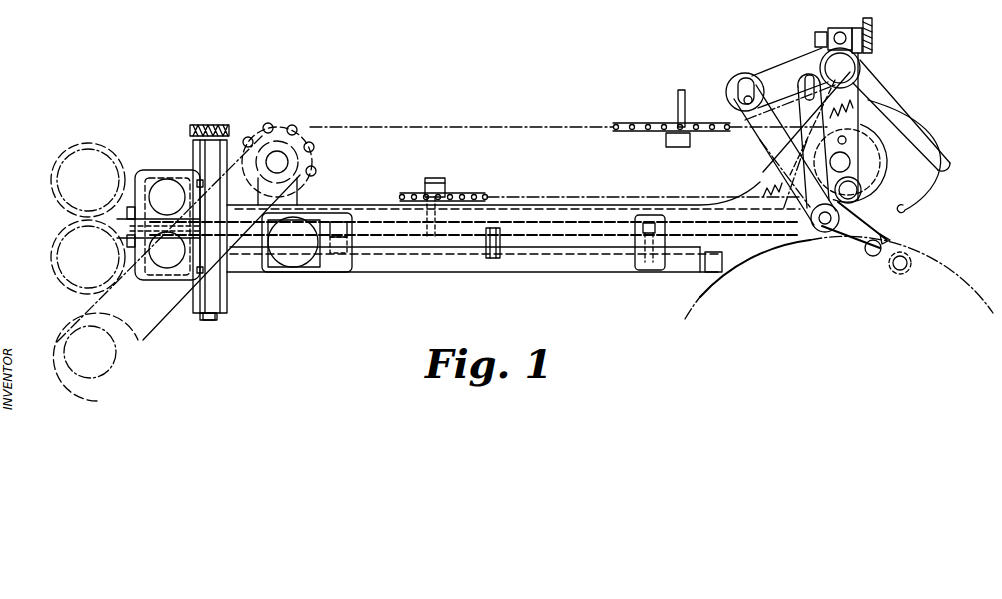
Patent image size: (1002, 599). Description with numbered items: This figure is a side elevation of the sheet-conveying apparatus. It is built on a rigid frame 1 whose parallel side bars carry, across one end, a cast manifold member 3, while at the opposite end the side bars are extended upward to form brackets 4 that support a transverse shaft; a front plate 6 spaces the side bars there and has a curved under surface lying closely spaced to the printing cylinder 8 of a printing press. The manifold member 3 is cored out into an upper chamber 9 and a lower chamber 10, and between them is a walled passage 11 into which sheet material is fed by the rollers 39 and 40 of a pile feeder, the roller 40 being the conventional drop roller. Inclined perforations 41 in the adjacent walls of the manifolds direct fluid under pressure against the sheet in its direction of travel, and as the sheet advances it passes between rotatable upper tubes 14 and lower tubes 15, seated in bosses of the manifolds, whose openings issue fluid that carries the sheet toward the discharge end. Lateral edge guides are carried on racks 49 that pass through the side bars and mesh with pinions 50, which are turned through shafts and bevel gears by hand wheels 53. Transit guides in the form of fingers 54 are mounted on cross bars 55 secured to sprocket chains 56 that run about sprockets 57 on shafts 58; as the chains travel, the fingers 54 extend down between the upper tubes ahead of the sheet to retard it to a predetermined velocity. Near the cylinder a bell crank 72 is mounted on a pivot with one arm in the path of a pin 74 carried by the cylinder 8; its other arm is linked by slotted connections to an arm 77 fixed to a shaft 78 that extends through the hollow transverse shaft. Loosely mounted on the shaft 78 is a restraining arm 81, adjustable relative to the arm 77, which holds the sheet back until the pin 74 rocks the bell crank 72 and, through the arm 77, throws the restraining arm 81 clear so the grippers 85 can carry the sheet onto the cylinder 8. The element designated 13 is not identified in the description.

The frame 1 is at (400, 273).
The manifold member 3 is at (171, 142).
The bracket 4 is at (763, 175).
The front plate 6 is at (743, 260).
The printing cylinder 8 is at (963, 278).
The upper chamber 9 is at (143, 170).
The lower chamber 10 is at (158, 273).
The walled passage 11 is at (178, 217).
The frame member 13 is at (639, 7).
The upper tube 14 is at (578, 206).
The lower tube 15 is at (582, 257).
The roller 39 is at (52, 252).
The drop roller 40 is at (52, 180).
The inclined perforations 41 is at (167, 238).
The rack 49 is at (197, 124).
The pinion 50 is at (193, 303).
The hand wheel 53 is at (290, 263).
The finger 54 is at (688, 95).
The cross bar 55 is at (683, 147).
The sprocket chain 56 is at (461, 192).
The sprocket 57 is at (257, 133).
The shaft 58 is at (290, 163).
The bell crank 72 is at (857, 225).
The pin 74 is at (870, 262).
The arm 77 is at (780, 73).
The shaft 78 is at (848, 68).
The restraining arm 81 is at (902, 115).
The grippers 85 is at (907, 247).